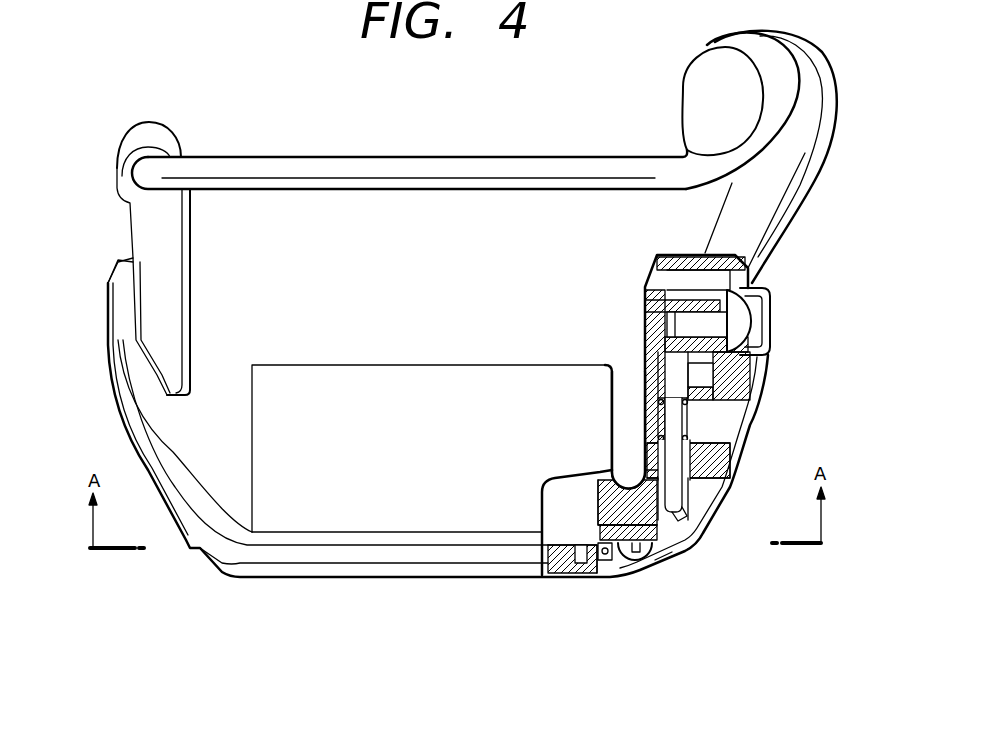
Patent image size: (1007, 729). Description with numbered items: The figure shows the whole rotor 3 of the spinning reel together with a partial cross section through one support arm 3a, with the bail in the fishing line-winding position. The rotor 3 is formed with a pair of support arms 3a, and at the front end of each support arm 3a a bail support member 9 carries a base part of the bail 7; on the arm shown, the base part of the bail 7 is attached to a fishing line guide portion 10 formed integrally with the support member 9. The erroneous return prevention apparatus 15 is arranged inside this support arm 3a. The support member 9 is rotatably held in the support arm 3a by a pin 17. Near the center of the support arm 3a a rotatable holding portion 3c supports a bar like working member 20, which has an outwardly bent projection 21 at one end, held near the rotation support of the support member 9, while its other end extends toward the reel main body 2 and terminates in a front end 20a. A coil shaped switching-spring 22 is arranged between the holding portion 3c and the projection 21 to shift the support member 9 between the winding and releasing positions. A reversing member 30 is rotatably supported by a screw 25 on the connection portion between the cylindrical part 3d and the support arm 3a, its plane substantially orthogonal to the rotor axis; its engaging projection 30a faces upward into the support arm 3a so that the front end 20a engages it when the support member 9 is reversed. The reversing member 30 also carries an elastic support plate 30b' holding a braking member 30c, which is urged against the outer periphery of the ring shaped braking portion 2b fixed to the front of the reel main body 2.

The reel main body 2 is at (553, 577).
The ring shaped braking portion 2b is at (585, 577).
The rotor 3 is at (318, 555).
The support arm 3a is at (123, 380).
The holding portion 3c is at (713, 453).
The cylindrical part 3d is at (316, 365).
The bail 7 is at (387, 158).
The bail support member 9 is at (163, 227).
The fishing line guide portion 10 is at (790, 57).
The erroneous return prevention apparatus 15 is at (616, 304).
The pin 17 is at (712, 327).
The bar like working member 20 is at (678, 410).
The front end 20a is at (680, 502).
The projection 21 is at (702, 375).
The switching-spring 22 is at (658, 398).
The screw 25 is at (663, 563).
The reversing member 30 is at (617, 520).
The engaging projection 30a is at (692, 547).
The elastic support plate 30b' is at (643, 585).
The braking member 30c is at (600, 547).